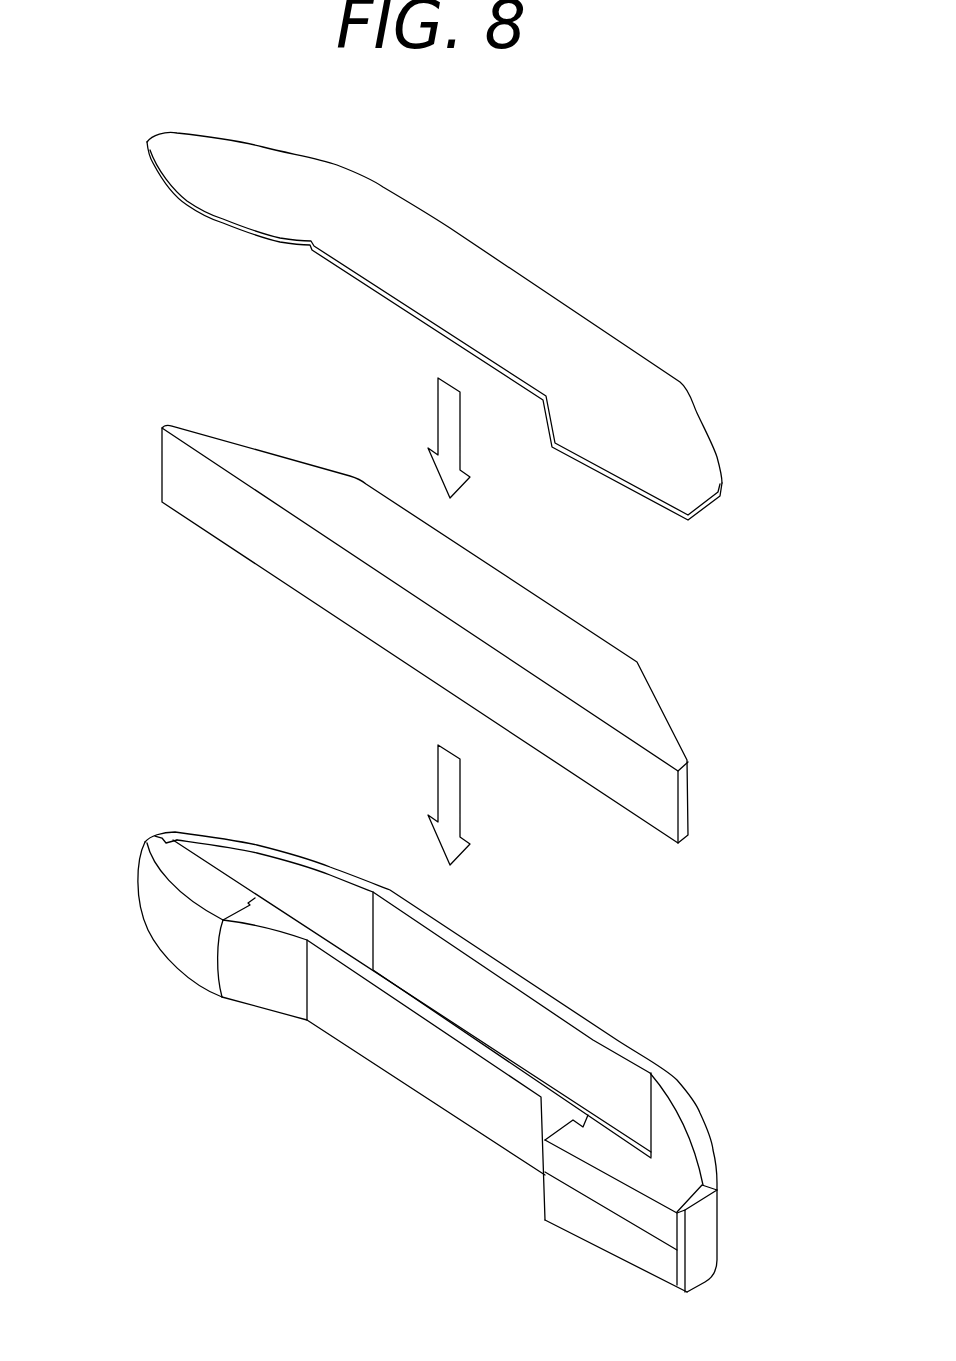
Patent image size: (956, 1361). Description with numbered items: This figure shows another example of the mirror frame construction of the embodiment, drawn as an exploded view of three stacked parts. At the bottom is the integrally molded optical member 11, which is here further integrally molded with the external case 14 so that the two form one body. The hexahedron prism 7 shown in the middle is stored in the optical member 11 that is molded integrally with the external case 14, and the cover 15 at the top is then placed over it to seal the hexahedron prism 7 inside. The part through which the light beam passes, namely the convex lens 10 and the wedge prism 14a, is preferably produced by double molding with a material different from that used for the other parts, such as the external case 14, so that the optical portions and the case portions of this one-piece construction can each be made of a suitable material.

The cover 15 is at (693, 423).
The hexahedron prism 7 is at (660, 702).
The convex lens 10 is at (432, 1095).
The optical member 11 is at (425, 1062).
The external case 14 is at (698, 1108).
The wedge prism 14a is at (620, 1237).